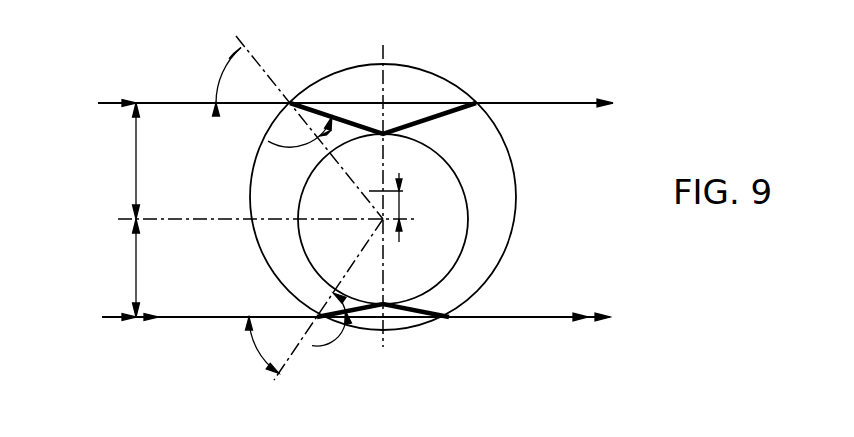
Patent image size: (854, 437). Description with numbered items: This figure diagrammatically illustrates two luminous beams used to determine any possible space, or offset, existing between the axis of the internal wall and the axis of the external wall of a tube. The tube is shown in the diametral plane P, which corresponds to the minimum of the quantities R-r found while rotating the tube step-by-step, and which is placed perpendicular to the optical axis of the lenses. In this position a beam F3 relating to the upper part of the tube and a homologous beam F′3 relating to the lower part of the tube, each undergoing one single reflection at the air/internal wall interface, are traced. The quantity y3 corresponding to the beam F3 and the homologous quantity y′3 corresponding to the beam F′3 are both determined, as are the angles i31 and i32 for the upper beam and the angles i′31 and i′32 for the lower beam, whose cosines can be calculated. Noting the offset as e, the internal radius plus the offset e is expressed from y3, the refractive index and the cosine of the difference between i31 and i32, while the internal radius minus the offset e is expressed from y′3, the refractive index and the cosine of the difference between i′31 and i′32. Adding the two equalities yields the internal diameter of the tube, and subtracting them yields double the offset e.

The diametral plane P is at (383, 61).
The beam F3 is at (530, 104).
The homologous beam F′3 is at (557, 316).
The quantity corresponding to beam F3 y3 is at (154, 161).
The homologous quantity corresponding to beam F′3 y′3 is at (153, 268).
The offset e is at (393, 207).
The angle i31 is at (199, 82).
The angle i32 is at (299, 144).
The angle i′31 is at (241, 345).
The angle i′32 is at (333, 336).